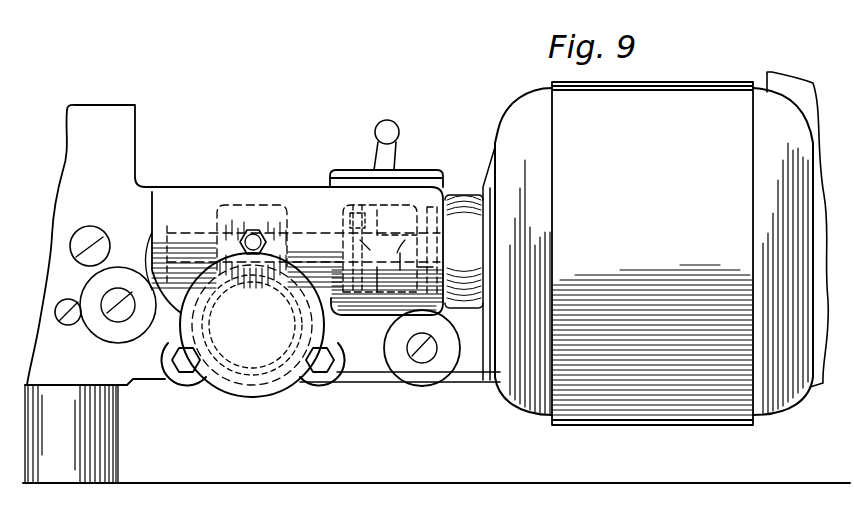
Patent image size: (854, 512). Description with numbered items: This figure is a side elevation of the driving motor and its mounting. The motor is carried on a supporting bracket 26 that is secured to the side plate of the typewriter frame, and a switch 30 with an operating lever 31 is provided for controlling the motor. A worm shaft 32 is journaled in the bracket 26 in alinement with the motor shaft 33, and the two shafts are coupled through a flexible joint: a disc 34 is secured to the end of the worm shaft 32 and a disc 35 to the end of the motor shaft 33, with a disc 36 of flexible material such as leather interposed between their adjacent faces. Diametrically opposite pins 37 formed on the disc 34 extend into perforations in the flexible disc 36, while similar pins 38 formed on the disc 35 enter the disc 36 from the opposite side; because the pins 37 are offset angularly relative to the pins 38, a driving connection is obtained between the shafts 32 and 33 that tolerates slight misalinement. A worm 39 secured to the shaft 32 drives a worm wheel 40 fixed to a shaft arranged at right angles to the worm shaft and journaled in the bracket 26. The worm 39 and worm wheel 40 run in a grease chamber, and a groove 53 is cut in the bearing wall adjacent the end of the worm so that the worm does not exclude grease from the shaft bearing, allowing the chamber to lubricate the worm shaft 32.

The supporting bracket 26 is at (352, 362).
The switch 30 is at (433, 177).
The operating lever 31 is at (394, 165).
The worm shaft 32 is at (303, 233).
The motor shaft 33 is at (400, 273).
The disc 34 is at (338, 236).
The disc 35 is at (374, 207).
The disc of flexible material 36 is at (360, 210).
The pins 37 is at (355, 220).
The pins 38 is at (365, 250).
The worm 39 is at (270, 225).
The worm wheel 40 is at (245, 347).
The groove 53 is at (286, 215).